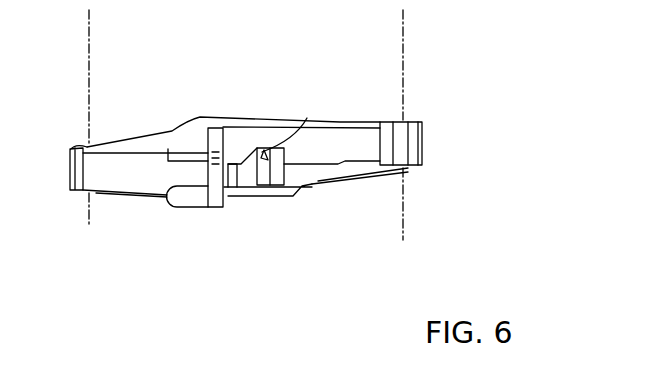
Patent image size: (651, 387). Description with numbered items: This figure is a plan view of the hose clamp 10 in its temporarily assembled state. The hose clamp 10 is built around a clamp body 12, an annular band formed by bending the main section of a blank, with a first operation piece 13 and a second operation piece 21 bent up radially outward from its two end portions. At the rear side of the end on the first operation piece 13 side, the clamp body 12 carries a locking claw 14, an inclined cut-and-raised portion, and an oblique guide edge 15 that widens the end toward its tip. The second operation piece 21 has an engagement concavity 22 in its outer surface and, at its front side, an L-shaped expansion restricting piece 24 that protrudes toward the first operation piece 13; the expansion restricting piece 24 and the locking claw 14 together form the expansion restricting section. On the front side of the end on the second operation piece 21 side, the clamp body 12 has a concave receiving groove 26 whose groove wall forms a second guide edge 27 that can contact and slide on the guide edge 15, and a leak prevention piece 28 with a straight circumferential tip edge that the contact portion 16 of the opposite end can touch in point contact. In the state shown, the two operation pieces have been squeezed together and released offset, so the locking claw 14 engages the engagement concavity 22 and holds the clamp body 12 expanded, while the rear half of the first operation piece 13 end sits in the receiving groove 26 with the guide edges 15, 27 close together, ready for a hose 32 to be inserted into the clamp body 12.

The hose clamp 10 is at (434, 129).
The clamp body 12 is at (415, 152).
The first operation piece 13 is at (278, 188).
The locking claw 14 is at (166, 129).
The guide edge 15 is at (242, 147).
The contact portion 16 is at (255, 147).
The second operation piece 21 is at (215, 128).
The engagement concavity 22 is at (208, 160).
The expansion restricting piece 24 is at (186, 200).
The receiving groove 26 is at (307, 118).
The guide edge 27 is at (243, 168).
The leak prevention piece 28 is at (316, 168).
The hose 32 is at (390, 204).